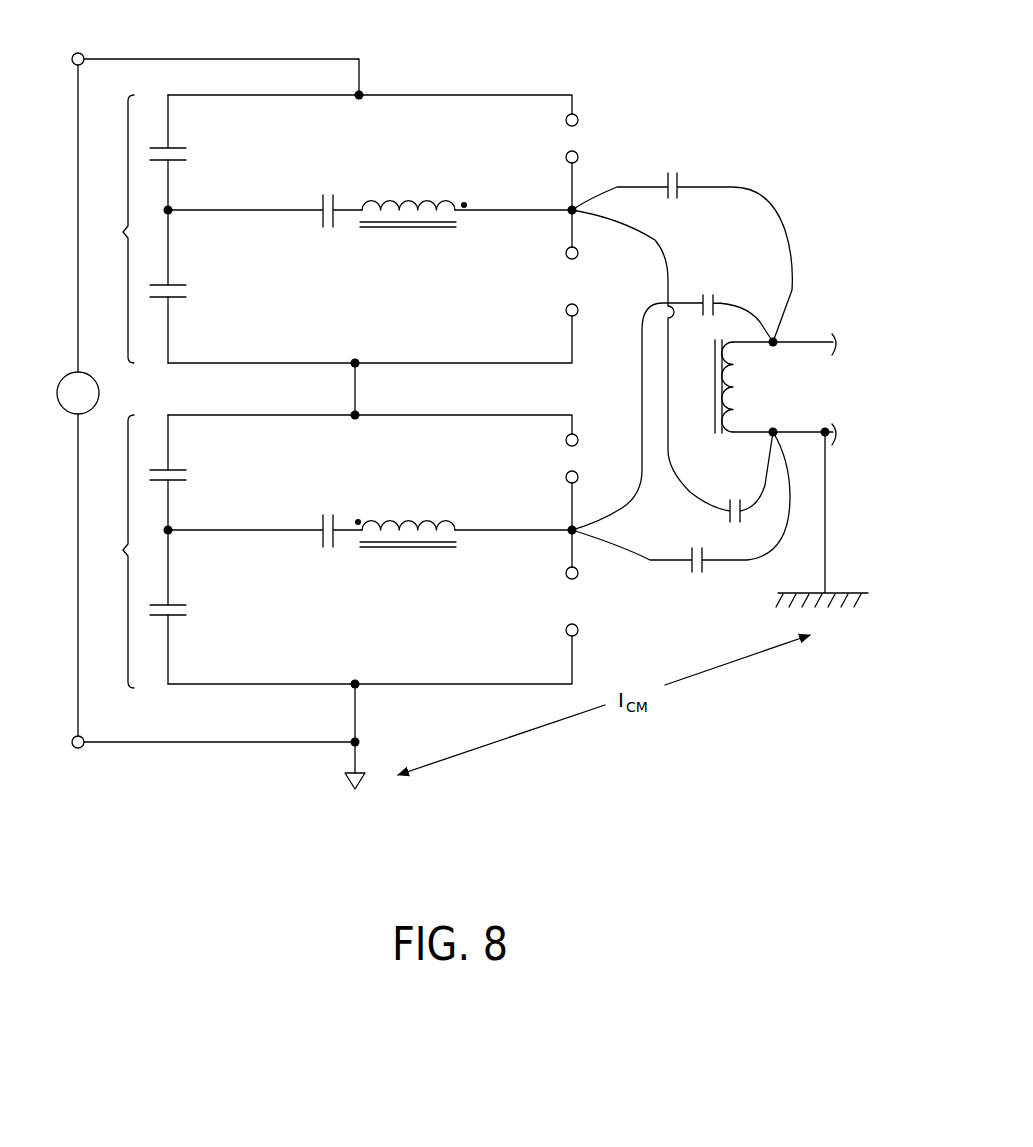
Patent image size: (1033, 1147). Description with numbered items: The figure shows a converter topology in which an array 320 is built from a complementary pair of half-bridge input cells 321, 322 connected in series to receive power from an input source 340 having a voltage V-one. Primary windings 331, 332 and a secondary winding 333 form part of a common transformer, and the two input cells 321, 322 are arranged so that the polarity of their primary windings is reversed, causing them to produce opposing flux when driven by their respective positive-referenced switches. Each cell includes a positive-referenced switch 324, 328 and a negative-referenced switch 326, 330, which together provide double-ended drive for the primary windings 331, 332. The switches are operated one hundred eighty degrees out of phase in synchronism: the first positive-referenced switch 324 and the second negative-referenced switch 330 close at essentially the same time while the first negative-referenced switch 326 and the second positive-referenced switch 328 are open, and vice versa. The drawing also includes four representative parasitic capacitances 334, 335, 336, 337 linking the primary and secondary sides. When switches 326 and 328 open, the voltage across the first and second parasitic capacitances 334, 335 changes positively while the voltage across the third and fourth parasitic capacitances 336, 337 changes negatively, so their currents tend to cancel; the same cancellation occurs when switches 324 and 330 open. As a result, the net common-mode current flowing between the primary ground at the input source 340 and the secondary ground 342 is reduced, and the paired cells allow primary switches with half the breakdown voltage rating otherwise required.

The array 320 is at (471, 42).
The half-bridge input cell 321 is at (328, 229).
The half-bridge input cell 322 is at (328, 551).
The positive-referenced switch 324 is at (567, 126).
The negative-referenced switch 326 is at (567, 259).
The positive-referenced switch 328 is at (567, 446).
The negative-referenced switch 330 is at (567, 579).
The primary winding 331 is at (397, 204).
The primary winding 332 is at (402, 521).
The secondary winding 333 is at (743, 388).
The parasitic capacitance 334 is at (677, 196).
The parasitic capacitance 335 is at (727, 518).
The parasitic capacitance 336 is at (718, 297).
The parasitic capacitance 337 is at (690, 568).
The input source 340 is at (107, 377).
The secondary ground 342 is at (850, 593).